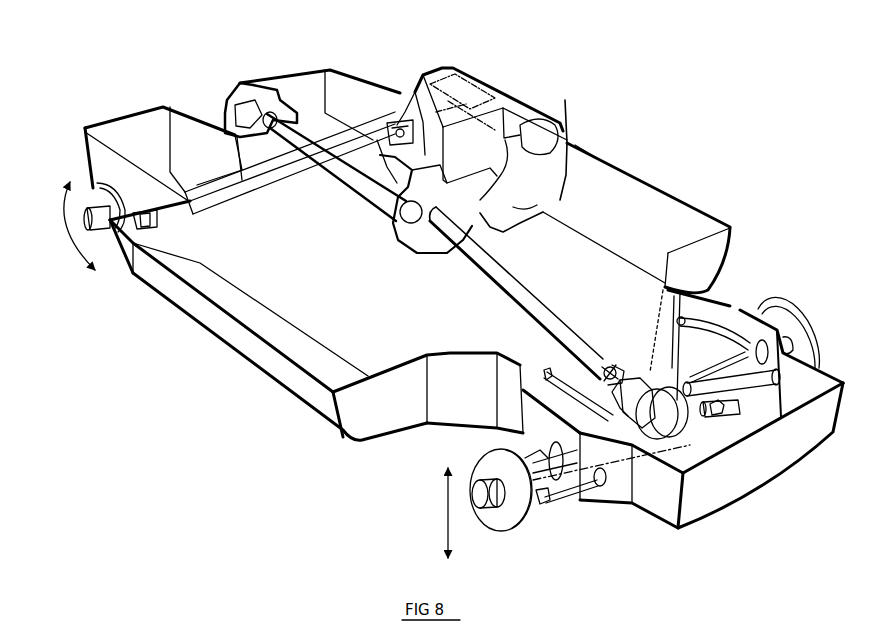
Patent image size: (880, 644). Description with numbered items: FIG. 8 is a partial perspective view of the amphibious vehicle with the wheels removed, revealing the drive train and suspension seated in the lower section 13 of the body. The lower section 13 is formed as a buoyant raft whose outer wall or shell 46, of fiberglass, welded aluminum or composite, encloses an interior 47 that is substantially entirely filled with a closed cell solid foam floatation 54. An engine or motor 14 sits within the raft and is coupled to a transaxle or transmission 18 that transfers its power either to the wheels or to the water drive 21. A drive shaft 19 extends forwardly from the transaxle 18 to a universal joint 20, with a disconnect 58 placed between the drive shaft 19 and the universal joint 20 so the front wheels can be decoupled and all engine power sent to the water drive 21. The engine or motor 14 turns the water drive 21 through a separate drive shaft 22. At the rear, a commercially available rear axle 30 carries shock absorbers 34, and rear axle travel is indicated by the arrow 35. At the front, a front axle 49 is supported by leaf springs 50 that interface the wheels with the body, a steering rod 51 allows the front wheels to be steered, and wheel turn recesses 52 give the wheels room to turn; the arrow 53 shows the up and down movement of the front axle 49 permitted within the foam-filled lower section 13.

The lower section 13 is at (207, 345).
The engine or motor 14 is at (448, 62).
The transaxle or transmission 18 is at (405, 248).
The drive shaft 19 is at (477, 278).
The universal joint 20 is at (647, 390).
The water drive 21 is at (233, 98).
The drive shaft 22 is at (362, 200).
The rear axle 30 is at (227, 216).
The shock absorbers 34 is at (398, 122).
The arrow 35 is at (60, 208).
The outer wall or shell 46 is at (138, 110).
The interior 47 is at (588, 190).
The front axle 49 is at (530, 453).
The leaf springs 50 is at (732, 333).
The steering rod 51 is at (586, 490).
The wheel turn recesses 52 is at (410, 458).
The arrow 53 is at (438, 516).
The solid foam floatation 54 is at (361, 335).
The disconnect 58 is at (606, 365).